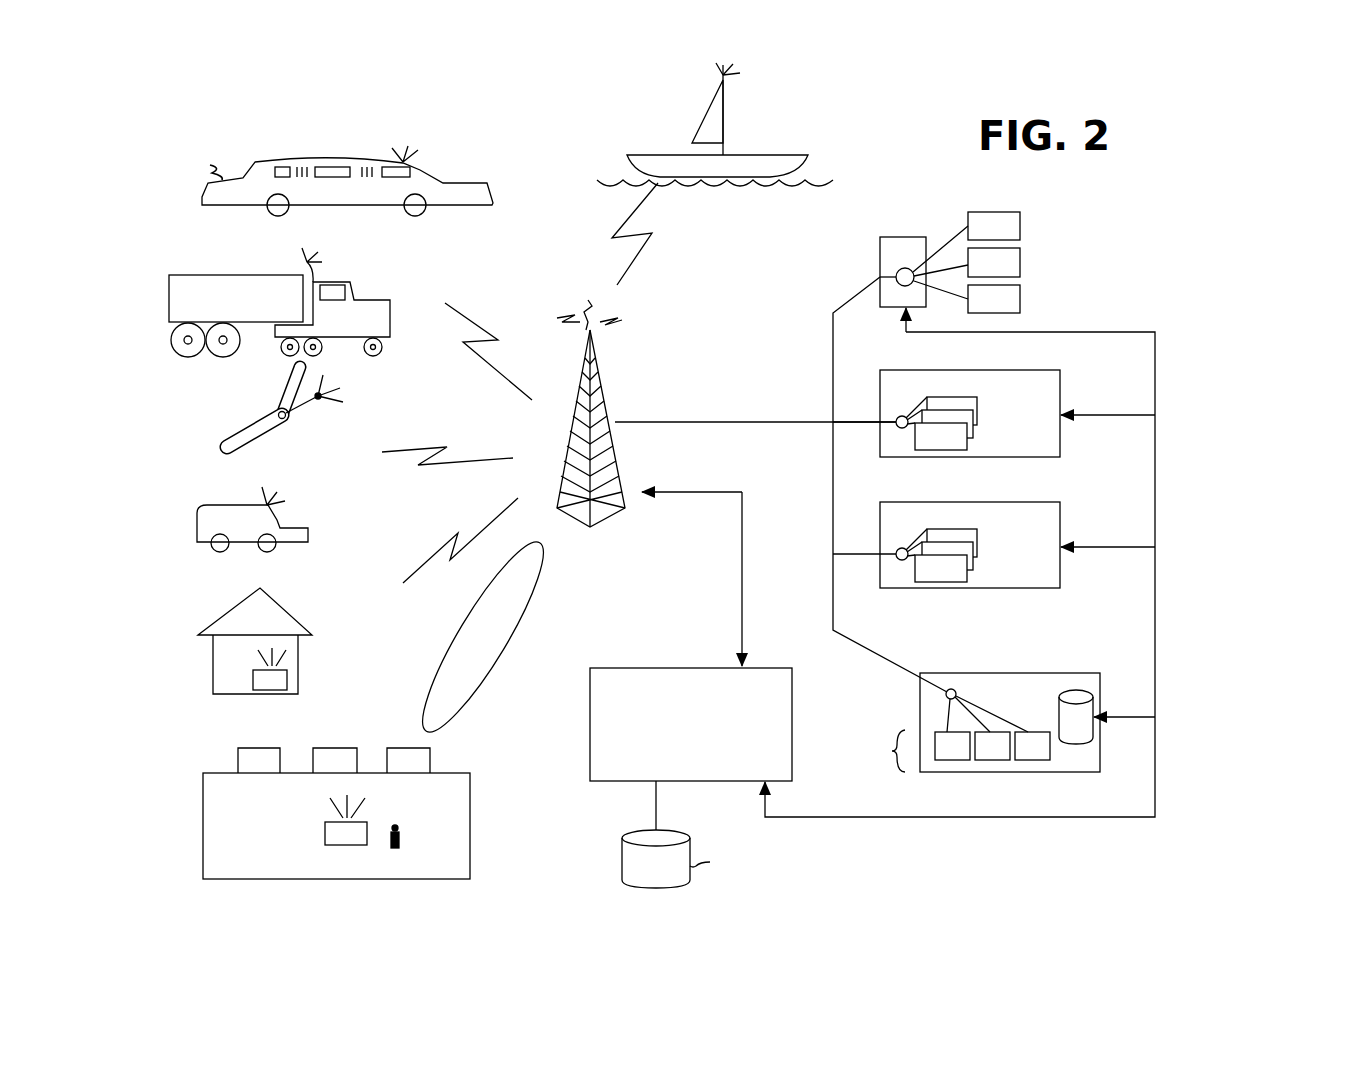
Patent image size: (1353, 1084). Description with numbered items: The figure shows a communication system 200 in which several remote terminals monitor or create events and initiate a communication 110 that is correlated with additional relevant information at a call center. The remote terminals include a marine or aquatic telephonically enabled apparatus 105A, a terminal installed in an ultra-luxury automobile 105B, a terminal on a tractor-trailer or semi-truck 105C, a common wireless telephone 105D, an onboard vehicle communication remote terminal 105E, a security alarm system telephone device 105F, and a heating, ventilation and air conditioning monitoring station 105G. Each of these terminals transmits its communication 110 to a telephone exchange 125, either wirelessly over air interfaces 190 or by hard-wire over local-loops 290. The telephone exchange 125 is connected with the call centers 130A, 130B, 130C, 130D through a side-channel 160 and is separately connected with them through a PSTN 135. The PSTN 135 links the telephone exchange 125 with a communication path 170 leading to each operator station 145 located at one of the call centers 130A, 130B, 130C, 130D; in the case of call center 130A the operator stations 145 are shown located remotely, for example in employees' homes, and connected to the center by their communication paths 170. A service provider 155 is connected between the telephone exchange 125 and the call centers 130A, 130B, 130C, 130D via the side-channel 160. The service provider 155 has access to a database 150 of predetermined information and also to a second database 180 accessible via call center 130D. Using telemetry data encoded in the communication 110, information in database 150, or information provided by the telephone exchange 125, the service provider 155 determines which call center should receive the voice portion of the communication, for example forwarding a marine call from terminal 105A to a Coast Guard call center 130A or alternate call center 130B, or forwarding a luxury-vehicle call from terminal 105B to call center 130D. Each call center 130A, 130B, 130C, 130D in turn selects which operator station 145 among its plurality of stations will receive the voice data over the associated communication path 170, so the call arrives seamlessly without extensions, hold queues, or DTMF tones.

The system 200 is at (1110, 194).
The remote terminal 105A is at (676, 140).
The remote terminal 105B is at (346, 158).
The remote terminal 105C is at (350, 278).
The common wireless telephone 105D is at (252, 418).
The onboard vehicle communication remote terminal 105E is at (290, 517).
The security alarm system telephone device 105F is at (288, 676).
The HVAC monitoring station 105G is at (367, 826).
The communication 110 is at (652, 233).
The air interface 190 is at (492, 340).
The telephone exchange 125 is at (625, 452).
The PSTN 135 is at (752, 420).
The local-loop 290 is at (505, 600).
The side-channel 160 is at (746, 526).
The service provider 155 is at (691, 724).
The database 150 is at (714, 836).
The call center 130A is at (880, 256).
The call center 130B is at (880, 370).
The call center 130C is at (880, 502).
The call center 130D is at (958, 673).
The operator station 145 is at (980, 560).
The communication path 170 is at (957, 265).
The database 180 is at (1093, 705).